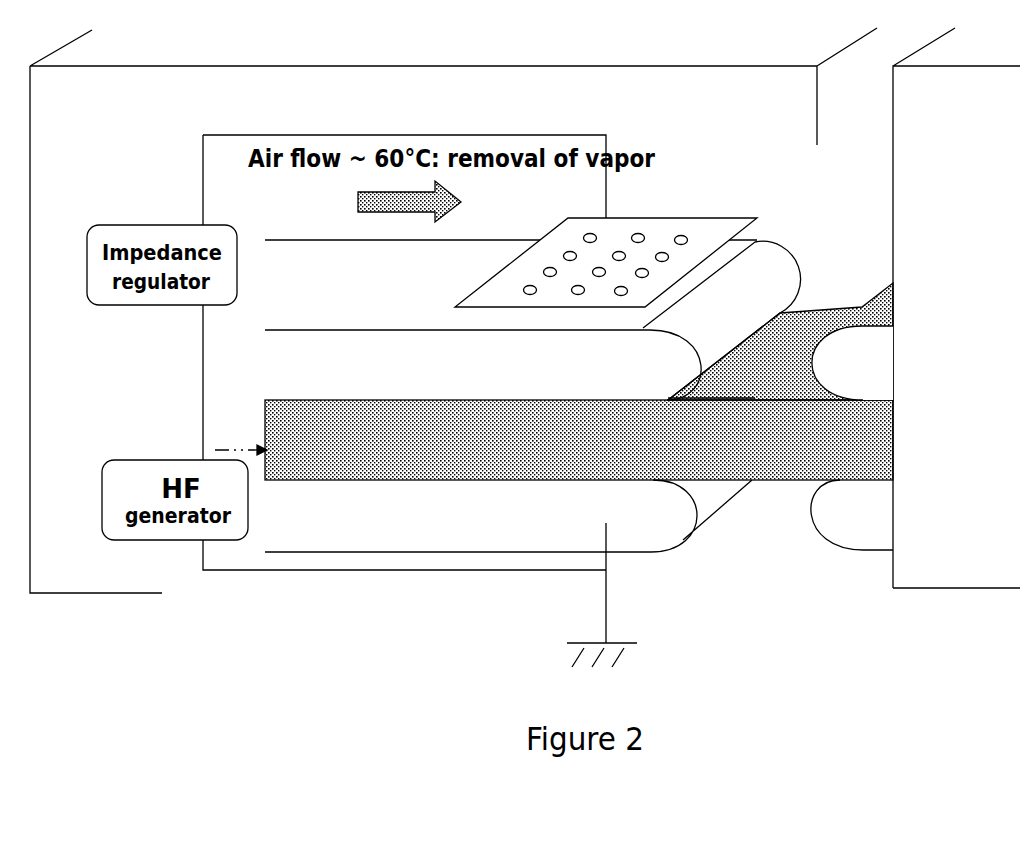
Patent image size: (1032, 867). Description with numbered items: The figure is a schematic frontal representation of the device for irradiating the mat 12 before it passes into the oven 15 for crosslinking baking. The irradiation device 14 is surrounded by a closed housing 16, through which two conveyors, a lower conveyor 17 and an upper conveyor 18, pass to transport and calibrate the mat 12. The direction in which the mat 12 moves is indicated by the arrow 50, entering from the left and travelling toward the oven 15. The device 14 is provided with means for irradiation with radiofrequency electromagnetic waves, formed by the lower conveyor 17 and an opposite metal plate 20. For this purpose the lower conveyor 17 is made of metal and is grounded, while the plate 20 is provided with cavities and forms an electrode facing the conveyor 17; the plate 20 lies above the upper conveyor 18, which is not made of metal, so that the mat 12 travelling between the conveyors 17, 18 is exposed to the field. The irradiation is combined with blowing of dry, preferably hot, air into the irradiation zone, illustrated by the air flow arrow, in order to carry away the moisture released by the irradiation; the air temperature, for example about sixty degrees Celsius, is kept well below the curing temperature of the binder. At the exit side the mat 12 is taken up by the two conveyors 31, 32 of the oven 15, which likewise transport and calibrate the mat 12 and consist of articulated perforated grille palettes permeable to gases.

The mat 12 is at (362, 400).
The irradiation device 14 is at (258, 643).
The oven 15 is at (923, 650).
The closed housing 16 is at (50, 595).
The lower conveyor 17 is at (636, 538).
The upper conveyor 18 is at (795, 266).
The metal plate 20 is at (725, 230).
The oven conveyor 31 is at (875, 538).
The oven conveyor 32 is at (880, 338).
The arrow 50 is at (263, 450).